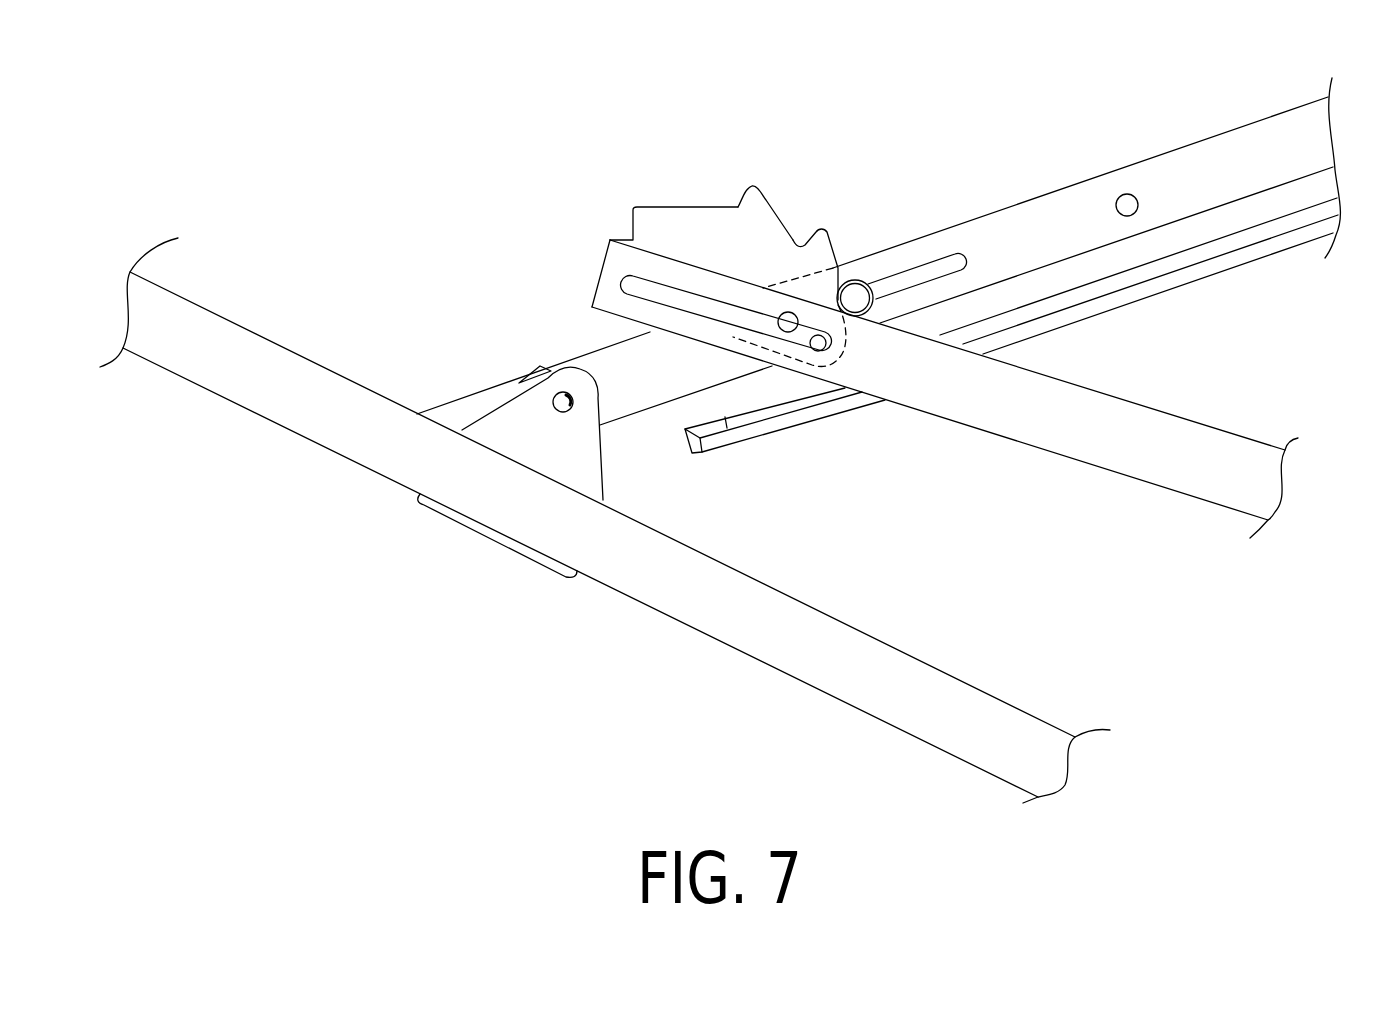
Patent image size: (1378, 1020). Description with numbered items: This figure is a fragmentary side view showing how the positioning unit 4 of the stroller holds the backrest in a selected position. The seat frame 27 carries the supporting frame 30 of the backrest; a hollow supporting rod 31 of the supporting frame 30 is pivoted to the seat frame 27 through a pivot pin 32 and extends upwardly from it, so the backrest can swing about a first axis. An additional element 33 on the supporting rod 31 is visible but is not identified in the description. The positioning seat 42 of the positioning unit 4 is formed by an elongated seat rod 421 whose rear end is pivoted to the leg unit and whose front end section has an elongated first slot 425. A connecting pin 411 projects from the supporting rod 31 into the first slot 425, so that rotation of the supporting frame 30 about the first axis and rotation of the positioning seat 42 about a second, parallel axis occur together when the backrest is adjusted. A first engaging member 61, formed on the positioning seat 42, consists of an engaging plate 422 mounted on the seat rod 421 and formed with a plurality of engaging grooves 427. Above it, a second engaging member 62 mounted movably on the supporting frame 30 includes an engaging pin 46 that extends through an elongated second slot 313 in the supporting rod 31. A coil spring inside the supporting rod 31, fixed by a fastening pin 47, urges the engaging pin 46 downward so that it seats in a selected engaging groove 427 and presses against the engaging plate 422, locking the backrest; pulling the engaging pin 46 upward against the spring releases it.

The seat frame 27 is at (697, 645).
The supporting frame 30 is at (1051, 189).
The supporting rod 31 is at (1255, 142).
The bottom flange of rail 33 is at (1267, 248).
The second slot 313 is at (947, 265).
The fastening pin 47 is at (1124, 194).
The engaging pin 46 is at (856, 298).
The second engaging member 62 is at (888, 270).
The positioning unit 4 is at (770, 217).
The engaging plate 422 is at (690, 227).
The engaging groove 427 is at (797, 233).
The first engaging member 61 is at (686, 186).
The first slot 425 is at (630, 286).
The positioning seat 42 is at (901, 403).
The seat rod 421 is at (997, 436).
The connecting pin 411 is at (846, 392).
The pivot pin 32 is at (561, 404).